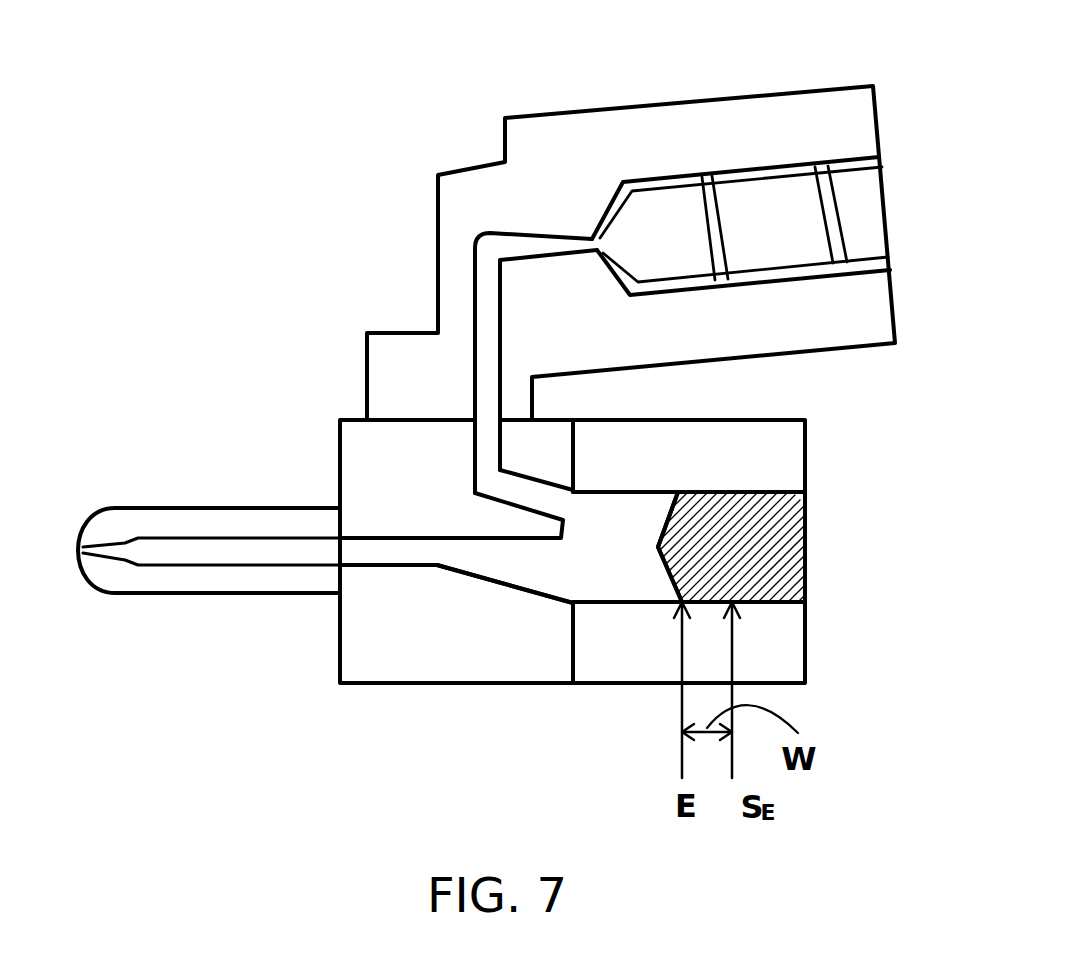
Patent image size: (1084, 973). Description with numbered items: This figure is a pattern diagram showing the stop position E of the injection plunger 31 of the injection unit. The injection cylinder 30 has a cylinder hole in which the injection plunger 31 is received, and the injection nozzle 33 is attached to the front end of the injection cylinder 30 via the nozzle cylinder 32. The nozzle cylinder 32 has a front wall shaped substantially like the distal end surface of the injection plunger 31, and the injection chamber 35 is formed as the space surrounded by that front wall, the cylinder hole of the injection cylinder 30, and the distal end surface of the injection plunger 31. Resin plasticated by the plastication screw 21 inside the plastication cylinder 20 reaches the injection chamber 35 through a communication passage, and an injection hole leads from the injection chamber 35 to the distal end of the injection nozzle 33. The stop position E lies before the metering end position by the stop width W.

The plastication cylinder 20 is at (567, 162).
The plastication screw 21 is at (665, 203).
The injection cylinder 30 is at (603, 653).
The injection plunger 31 is at (785, 552).
The nozzle cylinder 32 is at (417, 668).
The injection nozzle 33 is at (263, 587).
The injection chamber 35 is at (602, 568).